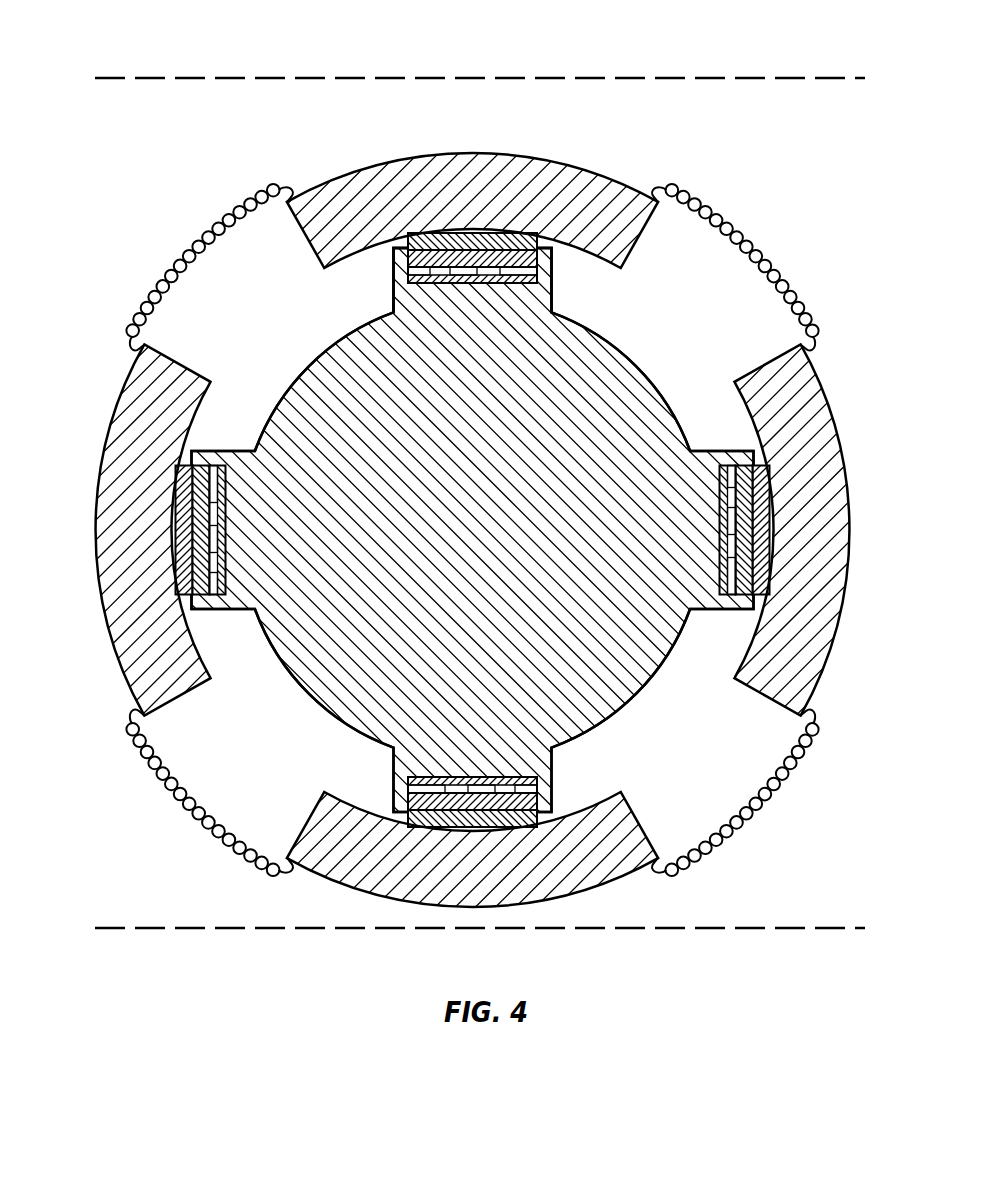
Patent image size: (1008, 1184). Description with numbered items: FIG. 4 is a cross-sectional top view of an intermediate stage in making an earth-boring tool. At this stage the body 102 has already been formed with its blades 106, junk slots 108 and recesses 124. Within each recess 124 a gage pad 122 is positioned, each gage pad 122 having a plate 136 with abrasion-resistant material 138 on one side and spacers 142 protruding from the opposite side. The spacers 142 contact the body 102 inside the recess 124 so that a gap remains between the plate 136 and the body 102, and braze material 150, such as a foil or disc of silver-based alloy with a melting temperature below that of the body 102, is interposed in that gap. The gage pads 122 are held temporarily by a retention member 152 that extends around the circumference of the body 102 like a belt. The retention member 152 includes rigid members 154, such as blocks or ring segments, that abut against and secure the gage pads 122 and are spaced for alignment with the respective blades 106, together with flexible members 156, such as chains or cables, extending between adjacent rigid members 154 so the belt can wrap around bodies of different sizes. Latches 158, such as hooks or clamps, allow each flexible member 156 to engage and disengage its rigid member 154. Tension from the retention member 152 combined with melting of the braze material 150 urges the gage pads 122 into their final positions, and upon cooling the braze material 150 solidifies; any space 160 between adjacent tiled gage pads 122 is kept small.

The body 102 is at (590, 397).
The blades 106 is at (532, 295).
The junk slots 108 is at (282, 378).
The gage pad 122 is at (696, 577).
The recess 124 is at (701, 560).
The plate 136 is at (743, 596).
The abrasion-resistant material 138 is at (762, 590).
The spacers 142 is at (716, 588).
The braze material 150 is at (470, 283).
The retention member 152 is at (473, 507).
The rigid members 154 is at (625, 208).
The flexible members 156 is at (742, 247).
The latches 158 is at (665, 180).
The space 160 is at (391, 78).